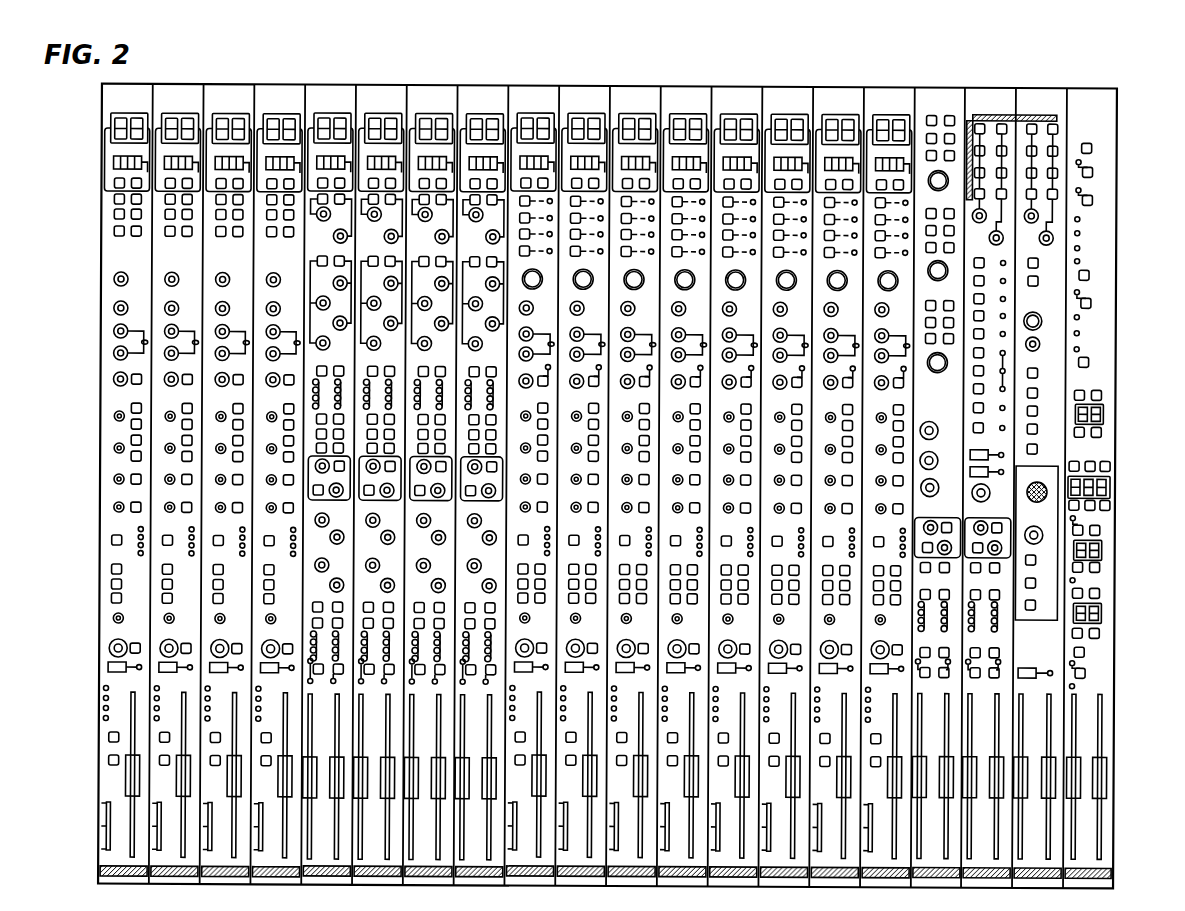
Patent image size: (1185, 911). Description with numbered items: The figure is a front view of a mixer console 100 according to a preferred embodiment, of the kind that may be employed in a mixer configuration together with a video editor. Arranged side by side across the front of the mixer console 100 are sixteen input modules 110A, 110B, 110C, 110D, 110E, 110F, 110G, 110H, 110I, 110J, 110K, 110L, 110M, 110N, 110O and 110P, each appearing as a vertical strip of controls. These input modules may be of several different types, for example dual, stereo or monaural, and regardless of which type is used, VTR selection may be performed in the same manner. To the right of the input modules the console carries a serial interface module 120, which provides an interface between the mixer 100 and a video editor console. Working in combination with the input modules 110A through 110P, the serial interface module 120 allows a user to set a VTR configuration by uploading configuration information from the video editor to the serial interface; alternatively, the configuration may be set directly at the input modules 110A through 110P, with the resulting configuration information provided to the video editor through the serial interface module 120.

The mixer console 100 is at (1047, 69).
The serial interface module 120 is at (1112, 88).
The input module 110A is at (100, 93).
The input module 110B is at (187, 84).
The input module 110C is at (238, 84).
The input module 110D is at (289, 84).
The input module 110E is at (340, 84).
The input module 110F is at (390, 84).
The input module 110G is at (441, 84).
The input module 110H is at (492, 84).
The input module 110I is at (542, 84).
The input module 110J is at (593, 84).
The input module 110K is at (644, 84).
The input module 110L is at (695, 84).
The input module 110M is at (746, 84).
The input module 110N is at (797, 84).
The input module 110O is at (848, 84).
The input module 110P is at (899, 84).